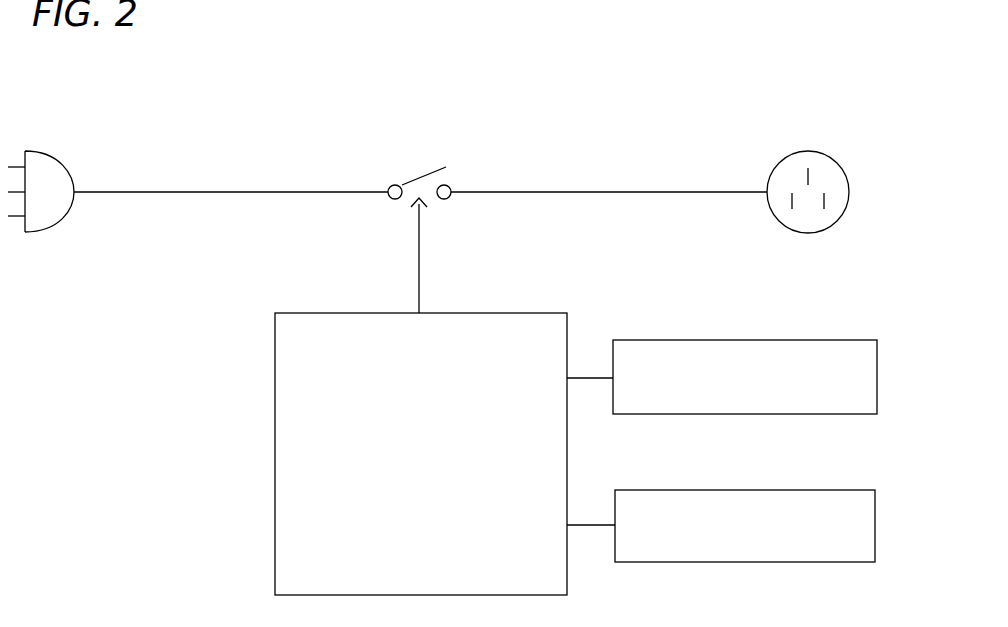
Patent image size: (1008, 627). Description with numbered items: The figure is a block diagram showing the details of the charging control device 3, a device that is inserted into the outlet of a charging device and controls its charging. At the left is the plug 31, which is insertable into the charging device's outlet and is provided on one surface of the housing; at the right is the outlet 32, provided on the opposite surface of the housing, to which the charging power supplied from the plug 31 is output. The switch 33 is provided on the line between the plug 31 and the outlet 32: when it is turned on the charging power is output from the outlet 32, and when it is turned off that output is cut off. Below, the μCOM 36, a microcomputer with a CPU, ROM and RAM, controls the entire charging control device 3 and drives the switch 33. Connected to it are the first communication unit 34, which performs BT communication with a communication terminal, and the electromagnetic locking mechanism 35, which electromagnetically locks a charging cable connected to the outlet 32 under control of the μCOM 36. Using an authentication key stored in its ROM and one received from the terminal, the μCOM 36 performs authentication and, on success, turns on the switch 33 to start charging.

The charging control device 3 is at (671, 148).
The plug 31 is at (67, 167).
The outlet 32 is at (812, 151).
The switch 33 is at (423, 175).
The first communication unit 34 is at (732, 340).
The electromagnetic locking mechanism 35 is at (785, 490).
The microcomputer (μCOM) 36 is at (275, 392).